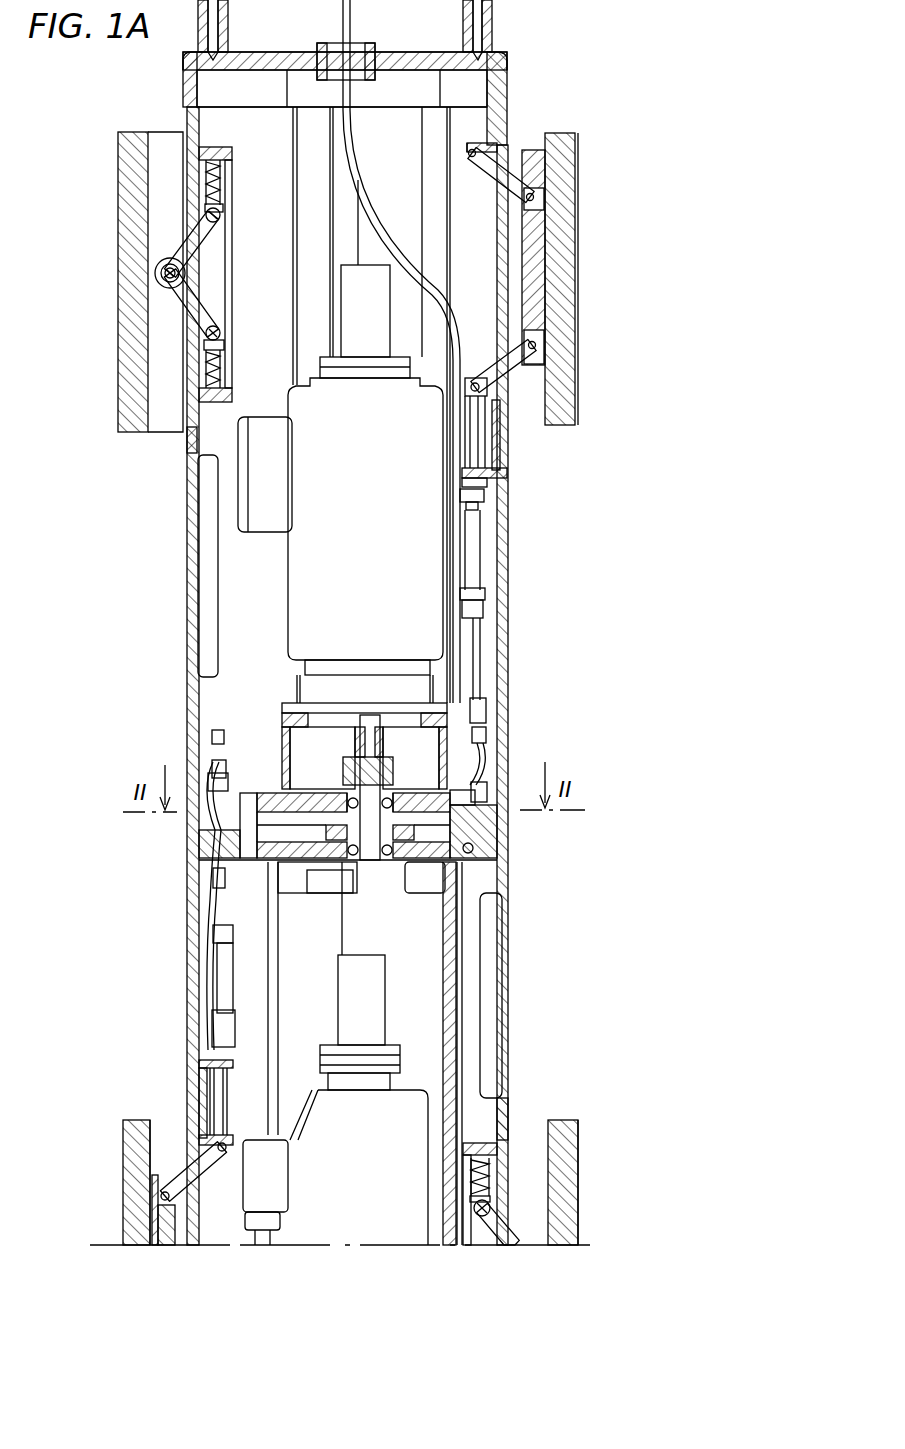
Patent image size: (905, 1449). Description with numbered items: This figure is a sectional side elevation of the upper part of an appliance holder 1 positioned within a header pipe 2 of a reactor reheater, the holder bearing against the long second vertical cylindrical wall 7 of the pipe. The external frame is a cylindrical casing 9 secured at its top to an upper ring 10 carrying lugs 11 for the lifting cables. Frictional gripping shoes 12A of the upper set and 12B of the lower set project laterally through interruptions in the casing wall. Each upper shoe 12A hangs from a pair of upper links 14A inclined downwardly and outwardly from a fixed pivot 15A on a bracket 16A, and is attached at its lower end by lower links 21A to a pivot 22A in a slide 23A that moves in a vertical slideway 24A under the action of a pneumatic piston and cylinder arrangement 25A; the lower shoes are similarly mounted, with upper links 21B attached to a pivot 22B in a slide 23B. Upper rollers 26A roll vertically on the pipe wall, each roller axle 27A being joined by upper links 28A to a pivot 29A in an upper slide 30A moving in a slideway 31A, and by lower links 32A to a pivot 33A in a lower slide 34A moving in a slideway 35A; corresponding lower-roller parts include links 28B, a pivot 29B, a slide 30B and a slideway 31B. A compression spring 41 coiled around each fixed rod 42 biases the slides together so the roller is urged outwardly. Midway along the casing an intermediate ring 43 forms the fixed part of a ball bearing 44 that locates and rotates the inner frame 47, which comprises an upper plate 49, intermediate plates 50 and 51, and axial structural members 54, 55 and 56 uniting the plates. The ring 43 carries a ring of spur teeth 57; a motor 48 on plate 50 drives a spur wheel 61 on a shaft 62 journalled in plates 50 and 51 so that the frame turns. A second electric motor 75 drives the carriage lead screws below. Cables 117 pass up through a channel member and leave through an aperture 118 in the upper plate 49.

The appliance holder 1 is at (534, 672).
The header pipe 2 is at (550, 316).
The second vertical cylindrical wall 7 is at (560, 364).
The cylindrical casing 9 is at (505, 598).
The upper ring 10 is at (495, 60).
The lugs 11 is at (226, 48).
The upper frictional gripping shoes 12A is at (545, 238).
The lower frictional gripping shoes 12B is at (155, 1227).
The upper links 14A is at (470, 196).
The fixed pivot 15A is at (477, 150).
The bracket 16A is at (500, 150).
The lower links 21A is at (502, 350).
The upper links 21B is at (197, 1178).
The pivot 22A is at (470, 390).
The pivot 22B is at (232, 1149).
The slide 23A is at (508, 403).
The slide 23B is at (188, 1137).
The vertical slideway 24A is at (490, 447).
The pneumatic piston and cylinder arrangement 25A is at (483, 540).
The upper rollers 26A is at (157, 271).
The roller axle 27A is at (165, 281).
The upper links 28A is at (185, 247).
The upper links 28B is at (493, 1232).
The pivot 29A is at (222, 218).
The pivot 29B is at (480, 1216).
The upper slide 30A is at (200, 197).
The upper slide 30B is at (490, 1200).
The vertical slideway 31A is at (222, 192).
The vertical slideway 31B is at (470, 1172).
The lower links 32A is at (185, 297).
The pivot 33A is at (222, 331).
The lower slide 34A is at (226, 346).
The vertical slideway 35A is at (226, 362).
The compression spring 41 is at (232, 182).
The fixed rods 42 is at (228, 164).
The intermediate ring 43 is at (502, 830).
The ball bearing 44 is at (470, 856).
The inner frame 47 is at (437, 1063).
The motor 48 is at (320, 577).
The upper horizontal circular plate 49 is at (400, 52).
The intermediate horizontal circular plate 50 is at (268, 800).
The intermediate horizontal circular plate 51 is at (325, 872).
The structural members 54 is at (310, 259).
The structural members 55 is at (280, 995).
The structural members 56 is at (430, 810).
The ring of spur teeth 57 is at (243, 860).
The spur wheel 61 is at (326, 829).
The shaft 62 is at (370, 855).
The second electric motor 75 is at (330, 1110).
The cables 117 is at (352, 50).
The aperture 118 is at (333, 52).